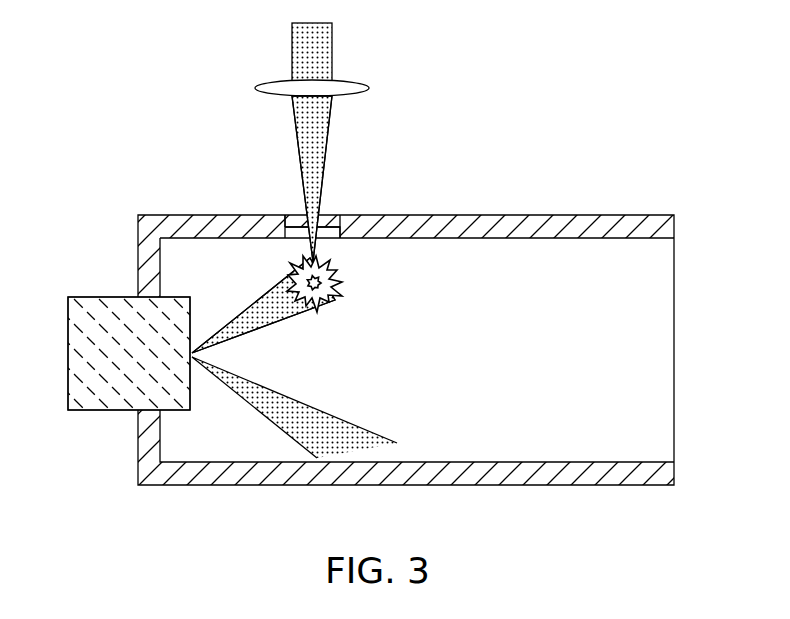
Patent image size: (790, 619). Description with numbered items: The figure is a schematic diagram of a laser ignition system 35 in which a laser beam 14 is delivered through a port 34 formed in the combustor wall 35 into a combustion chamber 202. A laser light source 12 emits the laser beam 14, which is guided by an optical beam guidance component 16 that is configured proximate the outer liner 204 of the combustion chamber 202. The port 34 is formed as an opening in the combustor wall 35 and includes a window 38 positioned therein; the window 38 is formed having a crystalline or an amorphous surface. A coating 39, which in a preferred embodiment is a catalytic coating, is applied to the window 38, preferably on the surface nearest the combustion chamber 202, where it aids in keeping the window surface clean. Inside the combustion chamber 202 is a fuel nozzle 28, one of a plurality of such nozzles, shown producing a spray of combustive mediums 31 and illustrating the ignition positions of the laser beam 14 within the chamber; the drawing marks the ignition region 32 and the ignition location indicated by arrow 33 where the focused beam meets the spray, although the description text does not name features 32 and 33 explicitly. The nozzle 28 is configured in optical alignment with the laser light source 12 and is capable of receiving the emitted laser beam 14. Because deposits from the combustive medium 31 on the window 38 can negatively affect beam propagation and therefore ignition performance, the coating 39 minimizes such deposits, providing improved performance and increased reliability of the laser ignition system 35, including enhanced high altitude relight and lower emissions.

The laser light source 12 is at (332, 41).
The laser beam 14 is at (322, 128).
The optical beam guidance component 16 is at (369, 87).
The fuel nozzle 28 is at (66, 347).
The combustive mediums 31 is at (350, 430).
The plasma 32 is at (324, 303).
The plasma emission path 33 is at (311, 316).
The port 34 is at (340, 238).
The laser ignition system 35 is at (617, 86).
The window 38 is at (330, 214).
The coating 39 is at (291, 214).
The combustion chamber 202 is at (565, 365).
The outer liner 204 is at (595, 213).